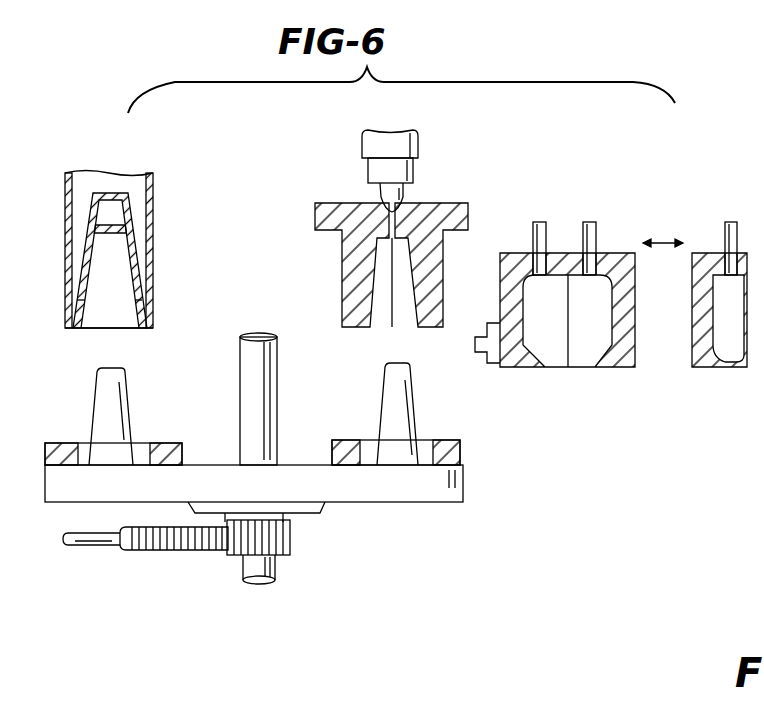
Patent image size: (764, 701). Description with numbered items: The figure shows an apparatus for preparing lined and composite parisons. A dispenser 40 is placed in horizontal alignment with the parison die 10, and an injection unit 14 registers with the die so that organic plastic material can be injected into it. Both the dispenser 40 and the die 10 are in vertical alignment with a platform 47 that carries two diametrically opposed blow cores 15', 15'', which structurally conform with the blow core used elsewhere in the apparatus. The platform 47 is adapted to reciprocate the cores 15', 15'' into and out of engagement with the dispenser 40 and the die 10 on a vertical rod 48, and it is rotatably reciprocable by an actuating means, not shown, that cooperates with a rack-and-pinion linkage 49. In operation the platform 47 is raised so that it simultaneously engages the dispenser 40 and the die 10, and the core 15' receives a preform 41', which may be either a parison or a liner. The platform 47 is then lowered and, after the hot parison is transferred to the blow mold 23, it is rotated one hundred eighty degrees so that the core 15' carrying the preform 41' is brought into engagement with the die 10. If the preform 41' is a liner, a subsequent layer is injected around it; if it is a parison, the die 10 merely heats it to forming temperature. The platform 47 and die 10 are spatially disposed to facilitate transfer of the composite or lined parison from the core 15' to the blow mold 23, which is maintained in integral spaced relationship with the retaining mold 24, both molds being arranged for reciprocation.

The parison die 10 is at (342, 275).
The injection unit 14 is at (410, 149).
The blow mold 23 is at (607, 252).
The retaining mold 24 is at (705, 253).
The dispenser 40 is at (150, 256).
The preform 41' is at (142, 254).
The platform 47 is at (464, 482).
The vertical rod 48 is at (264, 370).
The rack-and-pinion linkage 49 is at (292, 555).
The blow core 15' is at (144, 413).
The blow core 15'' is at (424, 414).